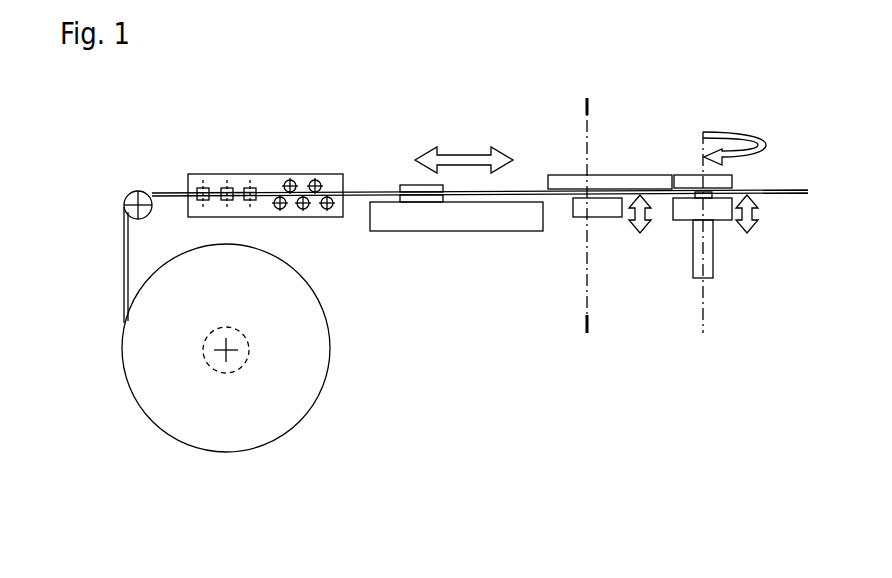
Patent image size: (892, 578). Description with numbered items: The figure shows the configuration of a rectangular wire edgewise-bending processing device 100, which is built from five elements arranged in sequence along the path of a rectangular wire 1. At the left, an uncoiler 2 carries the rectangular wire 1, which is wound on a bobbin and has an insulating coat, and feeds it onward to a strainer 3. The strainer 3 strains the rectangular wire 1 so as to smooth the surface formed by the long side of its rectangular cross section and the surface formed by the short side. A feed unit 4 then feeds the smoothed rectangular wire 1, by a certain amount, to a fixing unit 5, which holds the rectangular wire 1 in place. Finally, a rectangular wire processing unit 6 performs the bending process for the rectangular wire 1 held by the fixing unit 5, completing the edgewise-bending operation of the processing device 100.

The rectangular wire edgewise-bending processing device 100 is at (483, 517).
The rectangular wire 1 is at (163, 190).
The uncoiler 2 is at (157, 447).
The strainer 3 is at (248, 170).
The feed unit 4 is at (440, 232).
The fixing unit 5 is at (640, 172).
The rectangular wire processing unit 6 is at (690, 160).